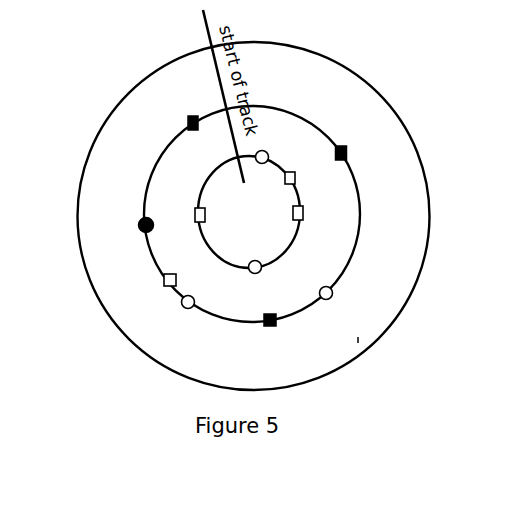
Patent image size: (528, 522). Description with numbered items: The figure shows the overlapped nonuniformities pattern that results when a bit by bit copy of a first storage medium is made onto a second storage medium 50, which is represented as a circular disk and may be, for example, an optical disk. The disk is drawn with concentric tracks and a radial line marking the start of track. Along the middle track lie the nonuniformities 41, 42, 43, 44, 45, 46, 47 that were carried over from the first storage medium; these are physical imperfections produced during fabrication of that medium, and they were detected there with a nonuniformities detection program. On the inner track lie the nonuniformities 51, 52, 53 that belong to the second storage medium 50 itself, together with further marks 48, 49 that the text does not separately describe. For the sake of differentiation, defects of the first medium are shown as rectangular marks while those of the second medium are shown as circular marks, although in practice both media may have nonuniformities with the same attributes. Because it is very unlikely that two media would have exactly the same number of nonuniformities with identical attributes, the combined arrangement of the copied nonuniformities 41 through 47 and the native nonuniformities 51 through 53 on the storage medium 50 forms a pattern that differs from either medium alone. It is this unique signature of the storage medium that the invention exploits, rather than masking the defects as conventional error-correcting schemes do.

The nonuniformity 41 is at (181, 116).
The nonuniformity 42 is at (133, 219).
The nonuniformity 43 is at (156, 286).
The nonuniformity 44 is at (192, 318).
The nonuniformity 45 is at (275, 338).
The nonuniformity 46 is at (336, 304).
The nonuniformity 47 is at (358, 154).
The inner track sector marker (open rectangle) 48 is at (193, 228).
The inner track sector marker (open circle) 49 is at (267, 278).
The second storage medium 50 is at (422, 207).
The nonuniformity 51 is at (311, 225).
The nonuniformity 52 is at (303, 181).
The nonuniformity 53 is at (275, 151).